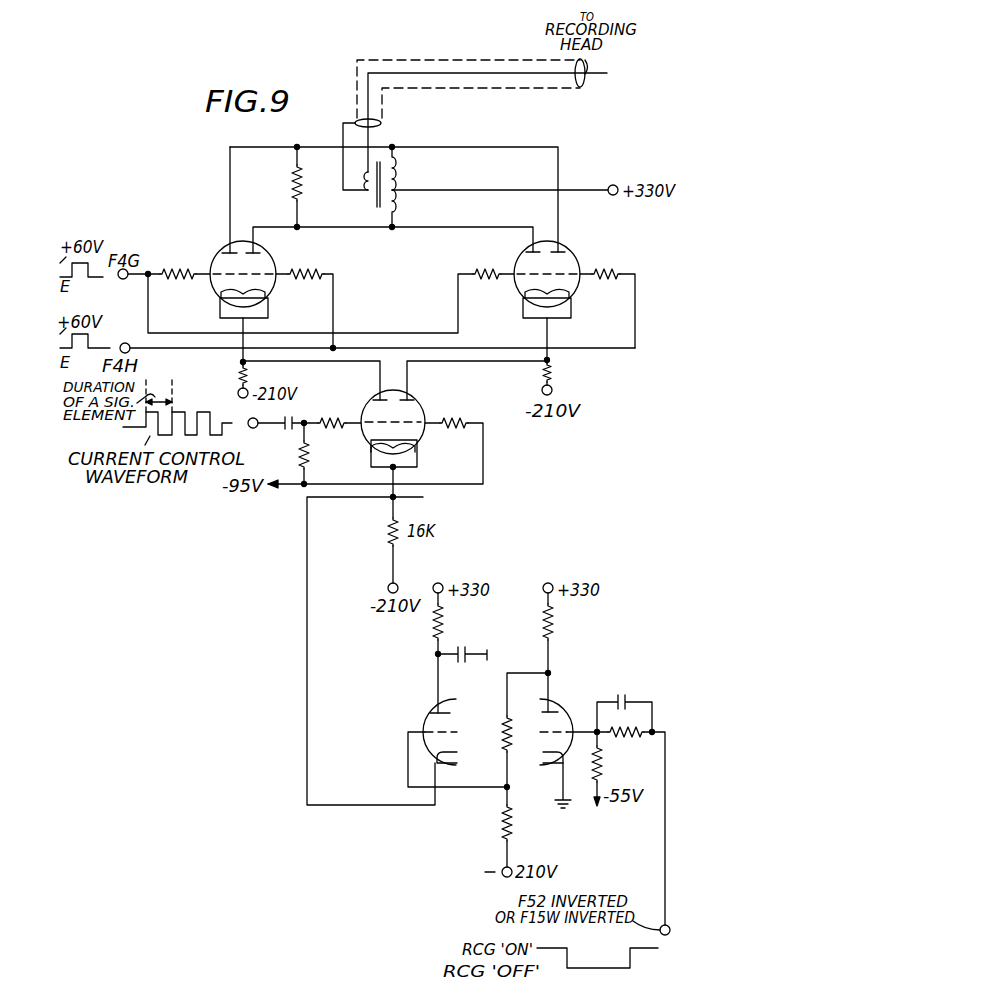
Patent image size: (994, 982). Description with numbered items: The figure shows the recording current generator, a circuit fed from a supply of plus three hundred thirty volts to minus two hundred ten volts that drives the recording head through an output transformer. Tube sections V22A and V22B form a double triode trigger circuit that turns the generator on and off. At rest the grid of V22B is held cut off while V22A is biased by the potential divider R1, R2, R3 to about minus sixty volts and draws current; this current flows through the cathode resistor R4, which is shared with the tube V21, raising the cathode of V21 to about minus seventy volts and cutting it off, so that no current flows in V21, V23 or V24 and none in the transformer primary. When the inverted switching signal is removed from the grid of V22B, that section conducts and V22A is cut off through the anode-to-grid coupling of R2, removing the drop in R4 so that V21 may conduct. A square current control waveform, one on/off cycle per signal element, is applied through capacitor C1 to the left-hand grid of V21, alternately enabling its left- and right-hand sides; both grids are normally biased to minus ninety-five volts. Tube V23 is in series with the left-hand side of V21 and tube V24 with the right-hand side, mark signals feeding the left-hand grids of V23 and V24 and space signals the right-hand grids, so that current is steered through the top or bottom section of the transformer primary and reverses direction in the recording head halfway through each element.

The recording tube V23 is at (262, 279).
The recording tube V24 is at (564, 279).
The current control tube V21 is at (401, 419).
The control tube section V22A is at (420, 728).
The control tube section V22B is at (572, 722).
The potential divider resistor R1 is at (562, 633).
The potential divider resistor R2 is at (519, 734).
The potential divider resistor R3 is at (520, 823).
The cathode resistor R4 is at (375, 532).
The coupling capacitor C1 is at (276, 431).